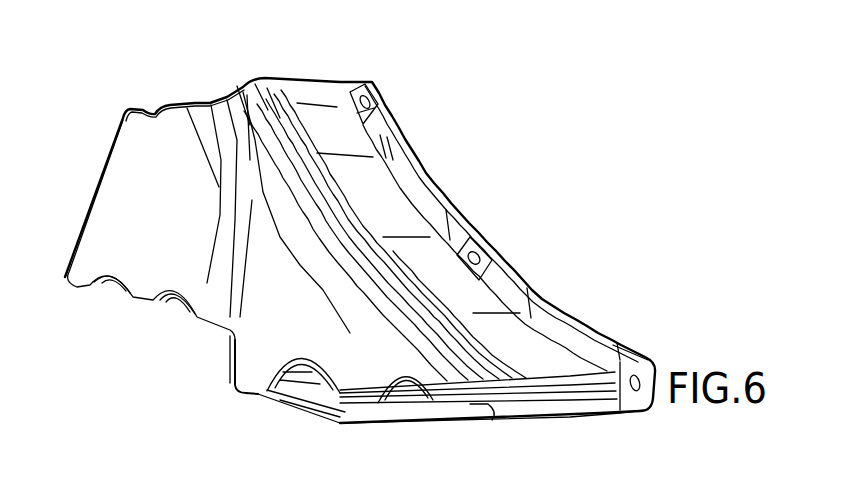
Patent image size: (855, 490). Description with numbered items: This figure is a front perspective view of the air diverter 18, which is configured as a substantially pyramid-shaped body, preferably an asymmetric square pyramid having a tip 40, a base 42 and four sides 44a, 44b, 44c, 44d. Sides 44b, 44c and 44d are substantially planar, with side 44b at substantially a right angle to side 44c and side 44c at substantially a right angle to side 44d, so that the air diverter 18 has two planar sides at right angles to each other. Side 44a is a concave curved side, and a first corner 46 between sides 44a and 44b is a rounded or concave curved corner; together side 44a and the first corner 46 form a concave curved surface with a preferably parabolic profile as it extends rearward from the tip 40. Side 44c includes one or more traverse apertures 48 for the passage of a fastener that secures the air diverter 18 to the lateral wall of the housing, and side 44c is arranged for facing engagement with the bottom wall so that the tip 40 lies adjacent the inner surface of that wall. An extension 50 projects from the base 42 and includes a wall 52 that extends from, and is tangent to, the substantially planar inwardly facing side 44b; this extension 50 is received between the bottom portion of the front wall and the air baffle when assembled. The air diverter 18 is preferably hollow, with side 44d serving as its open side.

The air diverter 18 is at (453, 53).
The tip 40 is at (621, 410).
The base 42 is at (233, 350).
The curved side 44a is at (380, 193).
The side 44b is at (370, 330).
The side 44c is at (497, 413).
The side 44d is at (583, 300).
The first corner 46 is at (254, 86).
The traverse apertures 48 is at (293, 383).
The extension 50 is at (93, 207).
The wall 52 is at (124, 175).